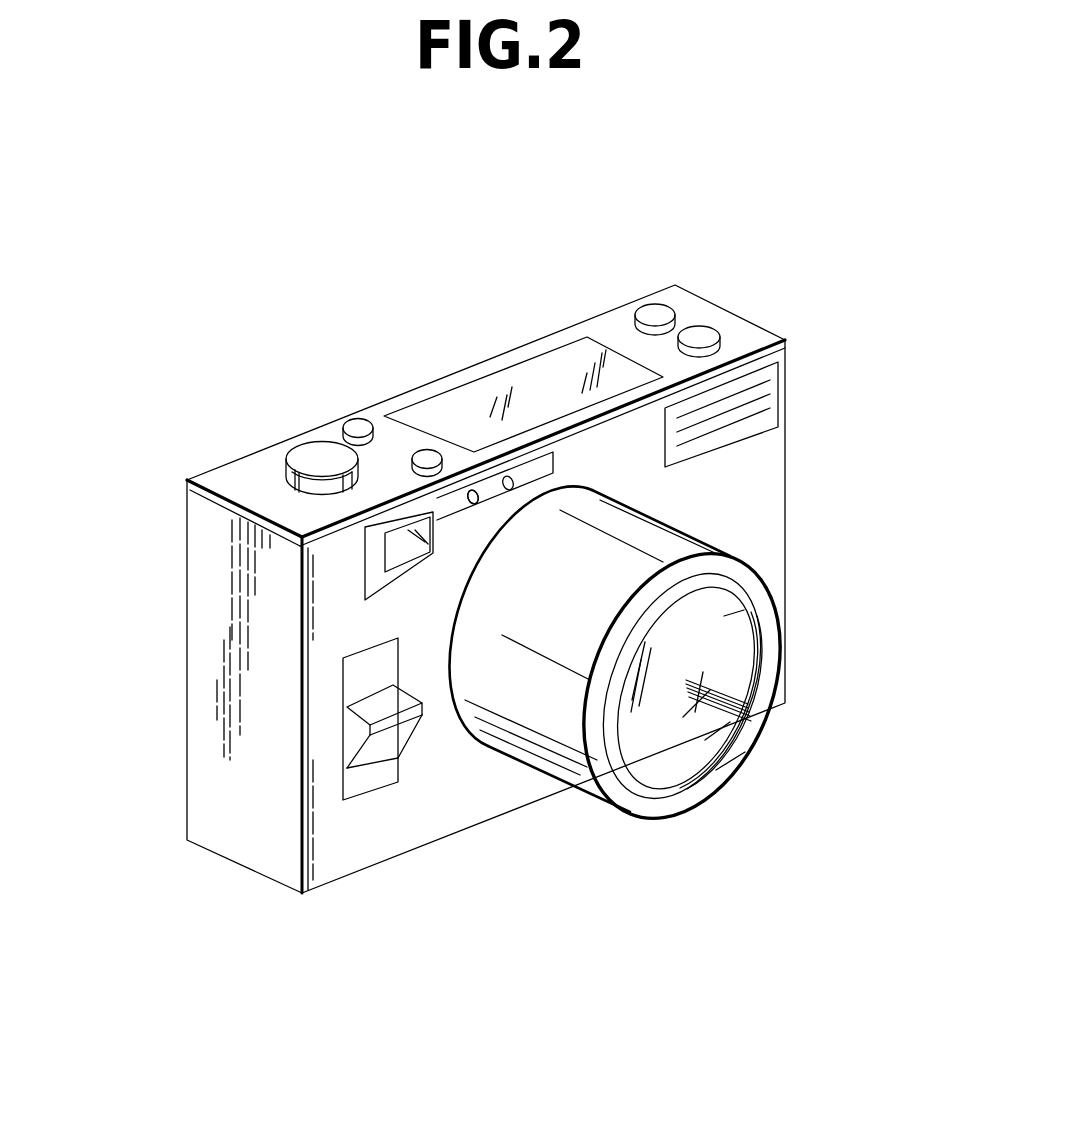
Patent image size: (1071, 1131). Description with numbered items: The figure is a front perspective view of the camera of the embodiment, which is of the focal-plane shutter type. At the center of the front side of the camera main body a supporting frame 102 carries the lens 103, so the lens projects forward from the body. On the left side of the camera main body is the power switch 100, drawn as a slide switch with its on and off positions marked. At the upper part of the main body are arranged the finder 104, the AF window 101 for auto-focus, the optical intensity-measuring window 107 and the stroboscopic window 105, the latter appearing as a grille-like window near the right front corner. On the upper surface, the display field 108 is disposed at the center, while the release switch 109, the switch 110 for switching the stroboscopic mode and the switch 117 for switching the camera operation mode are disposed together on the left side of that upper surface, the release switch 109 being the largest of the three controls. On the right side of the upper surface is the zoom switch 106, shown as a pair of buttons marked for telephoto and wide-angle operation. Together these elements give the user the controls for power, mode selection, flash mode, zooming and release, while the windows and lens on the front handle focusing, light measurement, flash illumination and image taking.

The power switch 100 is at (375, 777).
The AF window 101 is at (465, 504).
The supporting frame 102 is at (530, 717).
The lens 103 is at (662, 742).
The finder 104 is at (398, 548).
The stroboscopic window 105 is at (770, 392).
The zoom switch 106 is at (660, 312).
The optical intensity-measuring window 107 is at (555, 470).
The display field 108 is at (563, 373).
The release switch 109 is at (323, 462).
The switch for switching the stroboscopic mode 110 is at (427, 455).
The switch for switching the camera operation mode 117 is at (357, 425).